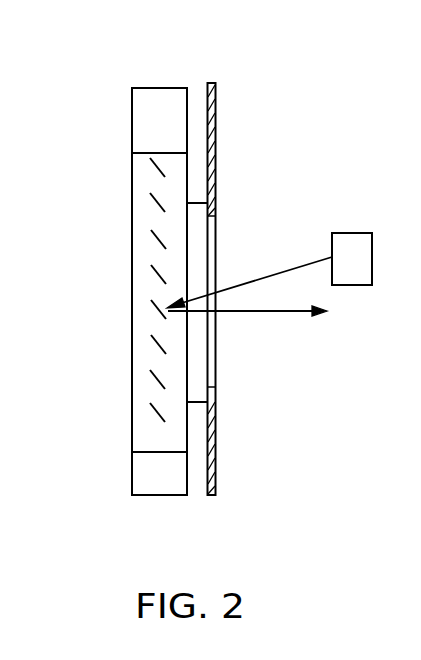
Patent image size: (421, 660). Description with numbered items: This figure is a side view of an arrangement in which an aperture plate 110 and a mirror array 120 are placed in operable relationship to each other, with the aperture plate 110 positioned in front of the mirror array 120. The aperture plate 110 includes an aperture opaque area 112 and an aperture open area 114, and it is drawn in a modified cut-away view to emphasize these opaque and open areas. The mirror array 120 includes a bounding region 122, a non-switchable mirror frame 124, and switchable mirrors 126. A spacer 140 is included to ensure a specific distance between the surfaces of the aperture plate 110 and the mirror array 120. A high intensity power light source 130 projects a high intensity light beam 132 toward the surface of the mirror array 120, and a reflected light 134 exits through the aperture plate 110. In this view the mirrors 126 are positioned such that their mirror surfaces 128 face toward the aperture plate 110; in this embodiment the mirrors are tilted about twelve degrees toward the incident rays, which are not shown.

The aperture plate 110 is at (212, 83).
The aperture opaque area 112 is at (214, 150).
The aperture open area 114 is at (214, 228).
The mirror array 120 is at (64, 111).
The bounding region 122 is at (150, 120).
The non-switchable mirror frame 124 is at (152, 178).
The switchable mirrors 126 is at (162, 305).
The mirror surfaces 128 is at (166, 280).
The high intensity power light source 130 is at (354, 233).
The high intensity light beam 132 is at (287, 268).
The reflected light 134 is at (277, 312).
The spacer 140 is at (213, 203).